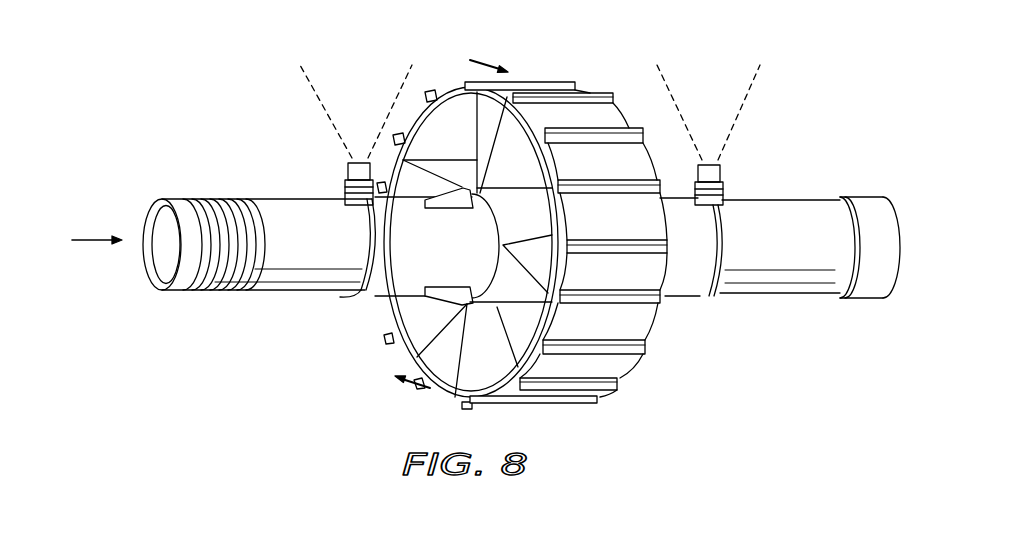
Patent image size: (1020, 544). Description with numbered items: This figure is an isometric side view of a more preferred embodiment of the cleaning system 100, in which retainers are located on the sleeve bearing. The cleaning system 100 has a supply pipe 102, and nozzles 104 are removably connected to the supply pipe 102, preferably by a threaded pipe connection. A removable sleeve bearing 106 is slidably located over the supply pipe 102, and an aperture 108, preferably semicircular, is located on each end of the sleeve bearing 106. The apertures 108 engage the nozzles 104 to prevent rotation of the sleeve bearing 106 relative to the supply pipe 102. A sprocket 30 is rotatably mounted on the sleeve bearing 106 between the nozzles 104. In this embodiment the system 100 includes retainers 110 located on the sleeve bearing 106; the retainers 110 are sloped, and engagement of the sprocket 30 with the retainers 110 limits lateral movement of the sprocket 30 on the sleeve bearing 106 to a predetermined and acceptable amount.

The sprocket 30 is at (617, 365).
The cleaning system 100 is at (778, 79).
The supply pipe 102 is at (297, 277).
The nozzle 104 is at (343, 192).
The sleeve bearing 106 is at (698, 292).
The aperture 108 is at (370, 213).
The retainer 110 is at (462, 193).